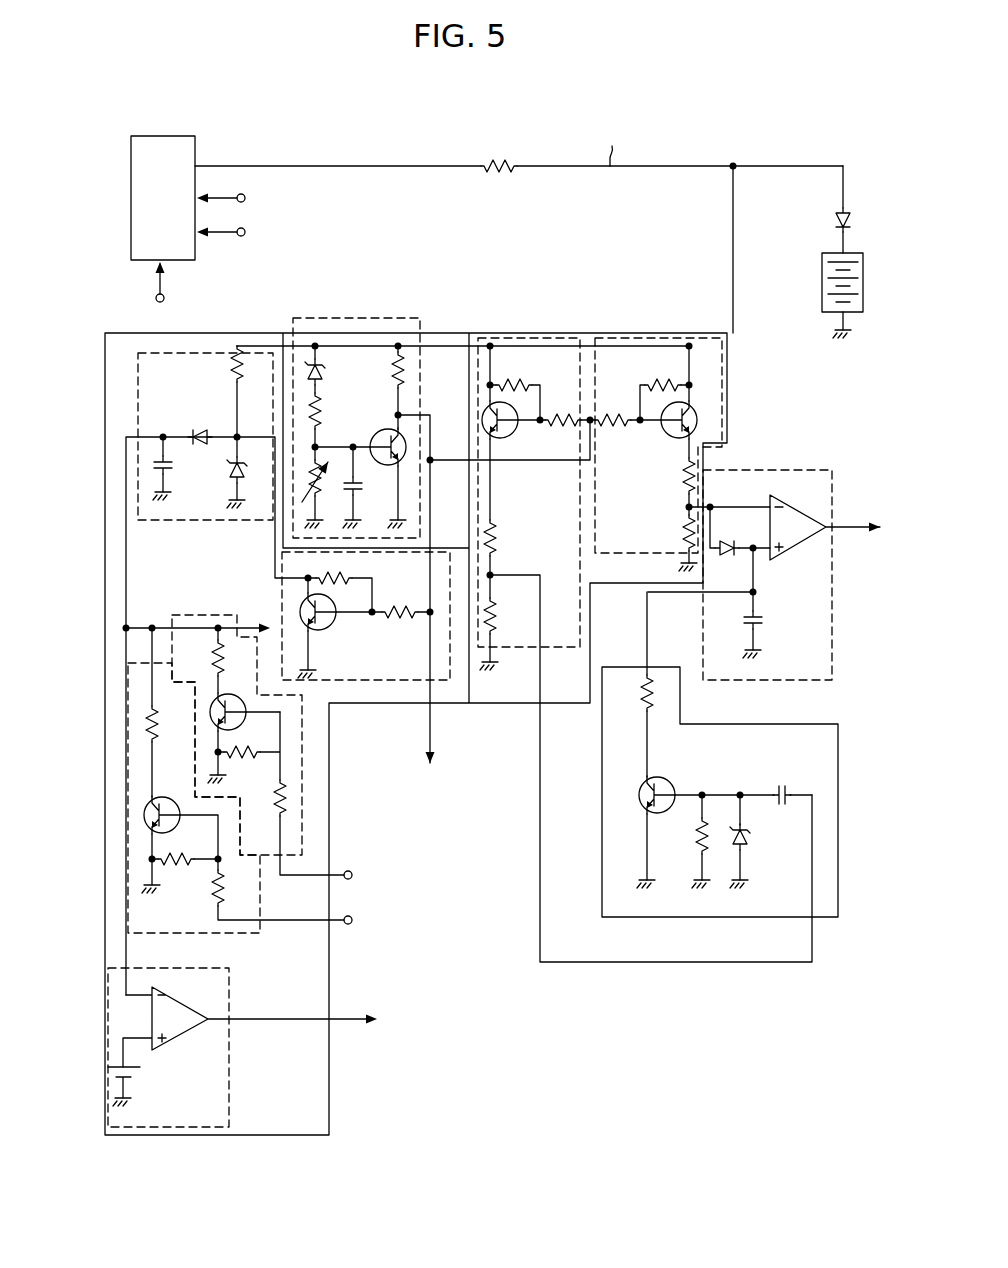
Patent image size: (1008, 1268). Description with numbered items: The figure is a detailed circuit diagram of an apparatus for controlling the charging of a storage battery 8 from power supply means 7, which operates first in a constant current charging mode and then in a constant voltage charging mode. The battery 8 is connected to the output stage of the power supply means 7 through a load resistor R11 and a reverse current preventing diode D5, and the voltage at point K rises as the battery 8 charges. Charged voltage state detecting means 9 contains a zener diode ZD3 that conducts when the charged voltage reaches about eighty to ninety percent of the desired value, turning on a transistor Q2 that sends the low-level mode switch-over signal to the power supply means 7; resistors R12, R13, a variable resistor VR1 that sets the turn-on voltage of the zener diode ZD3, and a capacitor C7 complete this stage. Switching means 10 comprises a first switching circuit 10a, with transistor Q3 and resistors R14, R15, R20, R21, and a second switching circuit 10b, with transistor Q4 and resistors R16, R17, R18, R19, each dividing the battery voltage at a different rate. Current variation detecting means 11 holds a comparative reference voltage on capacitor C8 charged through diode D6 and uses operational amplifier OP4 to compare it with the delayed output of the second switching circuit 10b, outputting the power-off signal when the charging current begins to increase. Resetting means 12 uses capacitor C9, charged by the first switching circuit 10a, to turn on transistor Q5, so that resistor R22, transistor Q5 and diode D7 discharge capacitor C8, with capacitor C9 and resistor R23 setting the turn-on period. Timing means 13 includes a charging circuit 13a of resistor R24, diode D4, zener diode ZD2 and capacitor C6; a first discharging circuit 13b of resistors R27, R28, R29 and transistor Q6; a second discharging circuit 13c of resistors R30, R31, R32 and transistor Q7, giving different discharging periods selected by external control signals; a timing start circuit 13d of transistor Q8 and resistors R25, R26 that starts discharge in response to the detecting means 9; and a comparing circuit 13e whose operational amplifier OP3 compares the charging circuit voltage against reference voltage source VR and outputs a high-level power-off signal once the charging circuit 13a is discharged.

The power supply means 7 is at (185, 136).
The storage battery 8 is at (822, 275).
The charged voltage state detecting means 9 is at (463, 538).
The switching means 10 is at (645, 623).
The first switching circuit 10a is at (645, 623).
The second switching circuit 10b is at (658, 428).
The current variation detecting means 11 is at (779, 545).
The resetting means 12 is at (746, 754).
The timing means 13 is at (105, 375).
The charging circuit 13a is at (181, 670).
The first discharging circuit 13b is at (218, 730).
The second discharging circuit 13c is at (222, 778).
The timing start circuit 13d is at (366, 672).
The comparing circuit 13e is at (231, 1033).
The point K is at (613, 145).
The load resistor R11 is at (499, 156).
The resistor R12 is at (332, 420).
The resistor R13 is at (381, 387).
The resistor R14 is at (515, 383).
The resistor R15 is at (565, 411).
The resistor R16 is at (614, 411).
The resistor R17 is at (664, 383).
The resistor R18 is at (671, 486).
The resistor R19 is at (672, 543).
The resistor R20 is at (508, 559).
The resistor R21 is at (646, 768).
The resistor R22 is at (628, 684).
The resistor R23 is at (685, 841).
The resistor R24 is at (215, 369).
The resistor R25 is at (340, 583).
The resistor R26 is at (401, 601).
The resistor R27 is at (200, 660).
The resistor R28 is at (249, 746).
The resistor R29 is at (309, 831).
The resistor R30 is at (169, 712).
The resistor R31 is at (185, 850).
The resistor R32 is at (281, 895).
The variable resistor VR1 is at (324, 487).
The reference voltage source VR is at (138, 1086).
The transistor Q2 is at (475, 603).
The transistor Q3 is at (511, 460).
The transistor Q4 is at (668, 429).
The transistor Q5 is at (705, 824).
The transistor Q6 is at (244, 727).
The transistor Q7 is at (182, 834).
The transistor Q8 is at (335, 628).
The diode D4 is at (198, 426).
The reverse current preventing diode D5 is at (825, 209).
The diode D6 is at (740, 531).
The diode D7 is at (754, 841).
The zener diode ZD2 is at (218, 472).
The zener diode ZD3 is at (333, 369).
The capacitor C6 is at (173, 468).
The capacitor C7 is at (348, 487).
The capacitor C8 is at (718, 603).
The capacitor C9 is at (791, 784).
The operational amplifier OP3 is at (200, 1011).
The operational amplifier OP4 is at (803, 515).